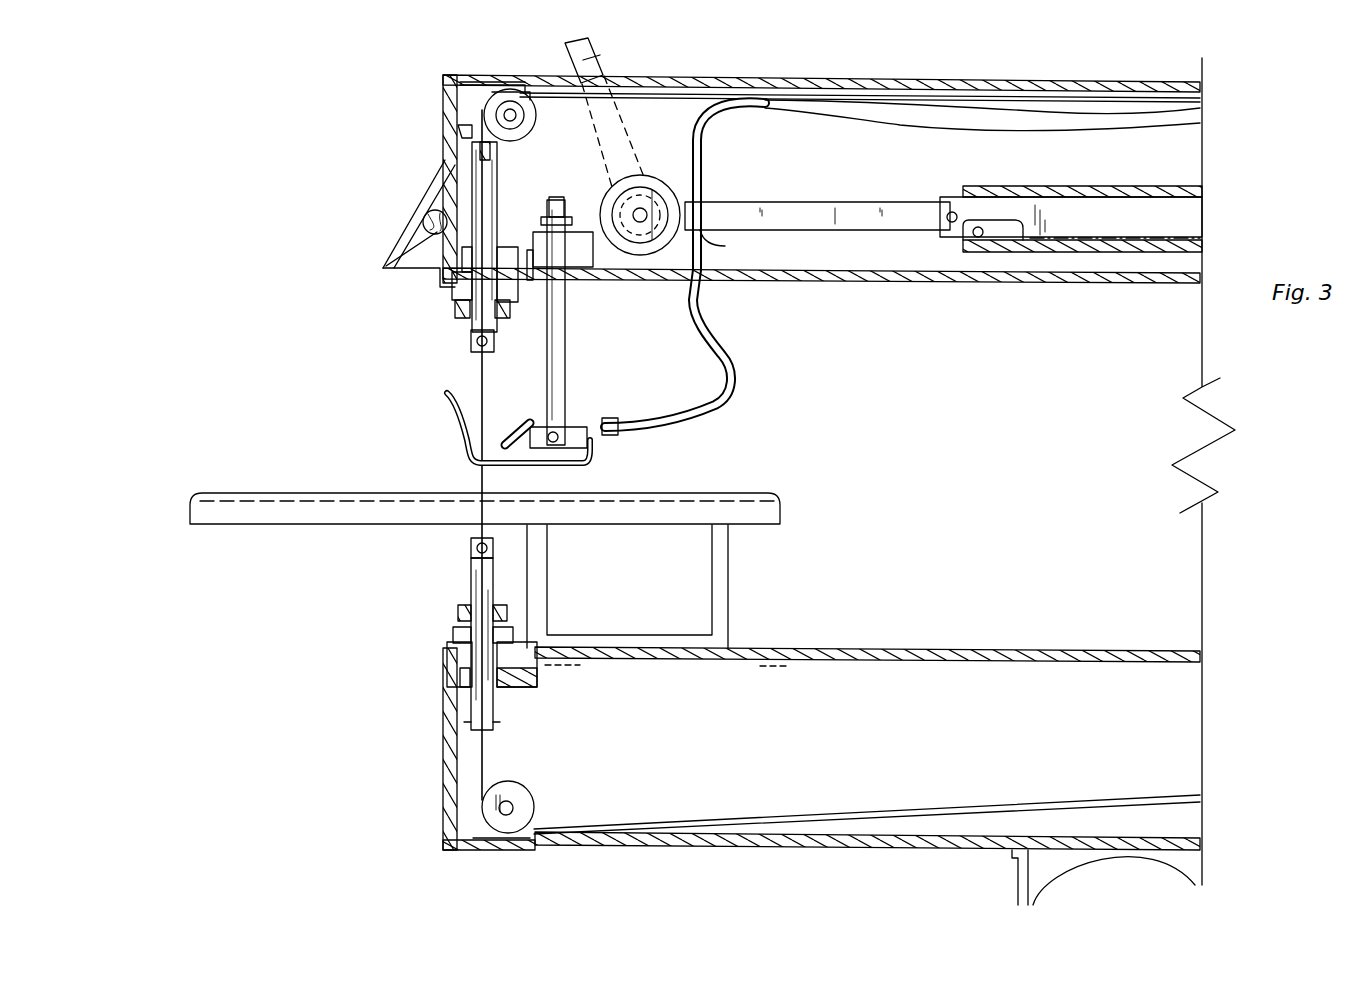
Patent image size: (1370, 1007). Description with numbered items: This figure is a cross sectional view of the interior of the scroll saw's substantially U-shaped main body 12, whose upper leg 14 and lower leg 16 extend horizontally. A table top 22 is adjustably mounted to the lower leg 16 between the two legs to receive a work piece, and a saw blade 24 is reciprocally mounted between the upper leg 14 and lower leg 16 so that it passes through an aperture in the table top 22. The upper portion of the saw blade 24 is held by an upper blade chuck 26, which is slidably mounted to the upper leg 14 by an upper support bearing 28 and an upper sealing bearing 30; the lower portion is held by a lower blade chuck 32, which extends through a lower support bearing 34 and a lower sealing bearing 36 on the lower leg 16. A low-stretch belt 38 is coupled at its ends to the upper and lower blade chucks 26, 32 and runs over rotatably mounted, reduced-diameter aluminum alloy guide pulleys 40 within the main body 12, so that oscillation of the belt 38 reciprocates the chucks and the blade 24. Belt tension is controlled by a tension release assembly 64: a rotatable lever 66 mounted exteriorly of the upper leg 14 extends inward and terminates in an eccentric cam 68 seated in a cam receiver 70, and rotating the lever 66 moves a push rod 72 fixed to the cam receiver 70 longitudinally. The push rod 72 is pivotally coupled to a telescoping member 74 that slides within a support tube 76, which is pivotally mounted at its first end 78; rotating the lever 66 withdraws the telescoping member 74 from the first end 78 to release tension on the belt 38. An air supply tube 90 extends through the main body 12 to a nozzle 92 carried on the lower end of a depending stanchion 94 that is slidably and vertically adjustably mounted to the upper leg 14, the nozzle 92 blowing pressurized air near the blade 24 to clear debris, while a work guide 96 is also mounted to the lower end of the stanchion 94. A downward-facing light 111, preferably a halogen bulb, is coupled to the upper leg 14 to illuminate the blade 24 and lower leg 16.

The main body 12 is at (882, 85).
The upper leg 14 is at (790, 79).
The lower leg 16 is at (882, 647).
The table top 22 is at (268, 516).
The saw blade 24 is at (481, 492).
The upper blade chuck 26 is at (383, 266).
The upper support bearing 28 is at (505, 243).
The upper sealing bearing 30 is at (455, 310).
The lower blade chuck 32 is at (480, 572).
The lower support bearing 34 is at (455, 688).
The lower sealing bearing 36 is at (458, 610).
The belt 38 is at (815, 805).
The guide pulleys 40 is at (498, 97).
The tension release assembly 64 is at (612, 69).
The rotatable lever 66 is at (601, 43).
The eccentric cam 68 is at (662, 182).
The cam receiver 70 is at (703, 240).
The push rod 72 is at (838, 225).
The telescoping member 74 is at (1043, 255).
The support tube 76 is at (1085, 268).
The first end 78 is at (958, 255).
The air supply tube 90 is at (727, 397).
The nozzle 92 is at (505, 425).
The depending stanchion 94 is at (565, 332).
The work guide 96 is at (447, 393).
The light 111 is at (420, 228).